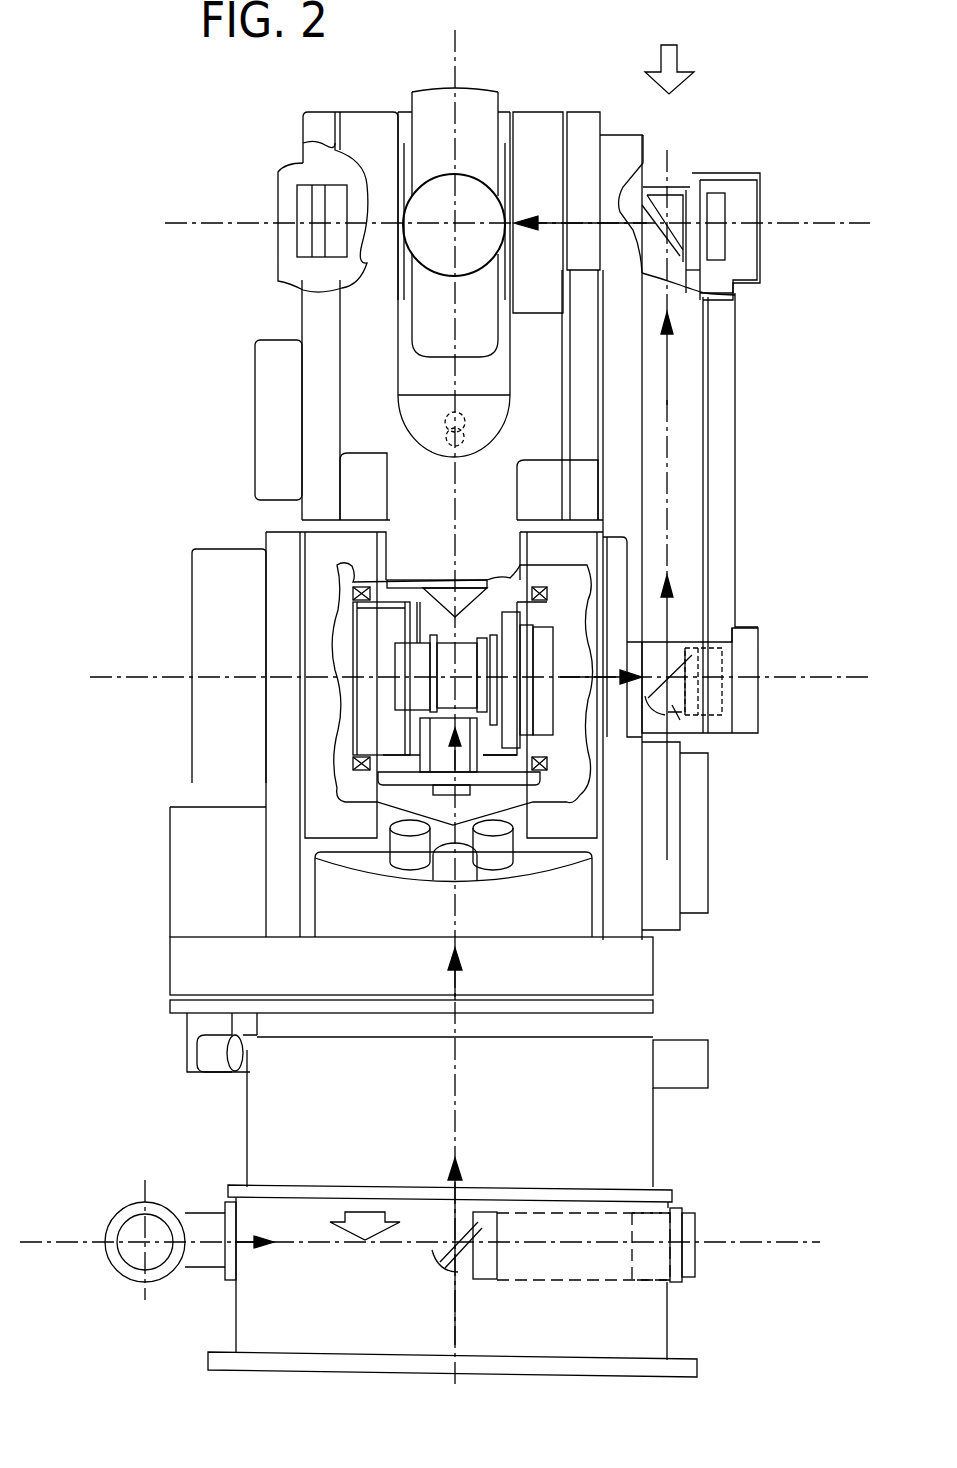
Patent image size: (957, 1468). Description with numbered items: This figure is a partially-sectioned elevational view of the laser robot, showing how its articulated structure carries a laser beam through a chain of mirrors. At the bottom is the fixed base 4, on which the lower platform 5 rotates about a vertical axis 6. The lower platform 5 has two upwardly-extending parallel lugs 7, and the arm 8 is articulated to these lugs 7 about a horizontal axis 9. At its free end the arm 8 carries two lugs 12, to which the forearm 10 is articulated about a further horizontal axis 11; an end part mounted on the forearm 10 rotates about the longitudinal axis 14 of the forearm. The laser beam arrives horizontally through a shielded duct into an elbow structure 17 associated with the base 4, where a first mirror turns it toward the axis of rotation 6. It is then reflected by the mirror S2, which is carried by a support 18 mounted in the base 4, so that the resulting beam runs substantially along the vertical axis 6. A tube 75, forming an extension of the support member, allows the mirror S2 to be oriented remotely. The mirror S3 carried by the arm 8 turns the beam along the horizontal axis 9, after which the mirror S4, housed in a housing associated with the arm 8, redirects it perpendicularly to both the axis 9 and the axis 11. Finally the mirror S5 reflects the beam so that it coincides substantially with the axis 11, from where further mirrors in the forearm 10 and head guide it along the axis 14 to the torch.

The fixed base 4 is at (690, 1310).
The lower platform 5 is at (668, 1128).
The vertical axis 6 is at (455, 1106).
The lugs 7 is at (302, 548).
The arm 8 is at (502, 492).
The horizontal axis 9 is at (832, 680).
The forearm 10 is at (478, 110).
The further horizontal axis 11 is at (808, 215).
The lugs 12 is at (365, 135).
The longitudinal axis 14 is at (454, 232).
The elbow structure 17 is at (200, 1195).
The support 18 is at (532, 1298).
The tube 75 is at (585, 1200).
The mirror S2 is at (435, 1255).
The mirror S3 is at (443, 665).
The mirror S4 is at (680, 705).
The mirror S5 is at (670, 185).